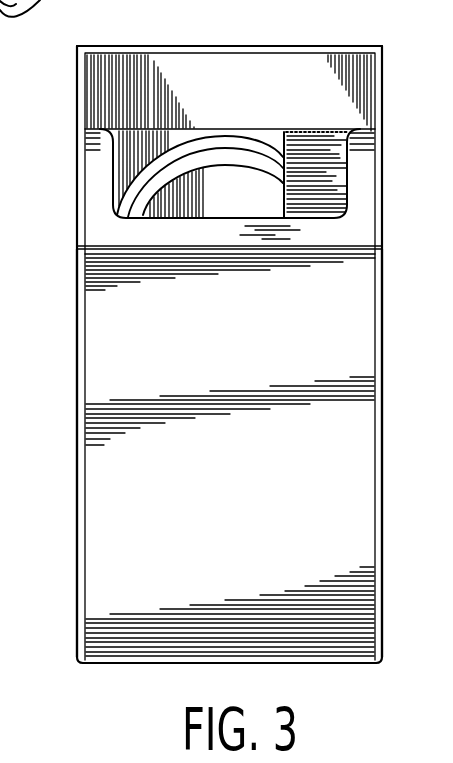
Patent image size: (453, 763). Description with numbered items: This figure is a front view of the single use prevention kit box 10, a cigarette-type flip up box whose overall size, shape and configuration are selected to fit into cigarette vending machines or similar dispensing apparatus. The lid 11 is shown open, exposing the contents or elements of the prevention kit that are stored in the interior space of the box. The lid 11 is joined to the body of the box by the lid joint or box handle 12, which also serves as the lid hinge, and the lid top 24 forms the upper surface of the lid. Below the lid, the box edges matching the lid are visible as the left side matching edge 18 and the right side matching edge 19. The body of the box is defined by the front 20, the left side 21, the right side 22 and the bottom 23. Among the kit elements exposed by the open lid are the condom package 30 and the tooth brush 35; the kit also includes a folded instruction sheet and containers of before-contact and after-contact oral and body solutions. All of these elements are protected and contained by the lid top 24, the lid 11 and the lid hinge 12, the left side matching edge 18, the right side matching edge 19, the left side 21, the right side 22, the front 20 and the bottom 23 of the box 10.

The flip up box 10 is at (357, 413).
The lid 11 is at (78, 90).
The lid joint or box handle 12 is at (82, 152).
The left matching edge 18 is at (80, 208).
The right matching edge 19 is at (383, 195).
The front of box 20 is at (113, 517).
The left side 21 is at (105, 452).
The right side 22 is at (383, 470).
The bottom 23 is at (140, 663).
The top of box lid 24 is at (222, 46).
The condom package 30 is at (248, 160).
The tooth brush 35 is at (310, 157).